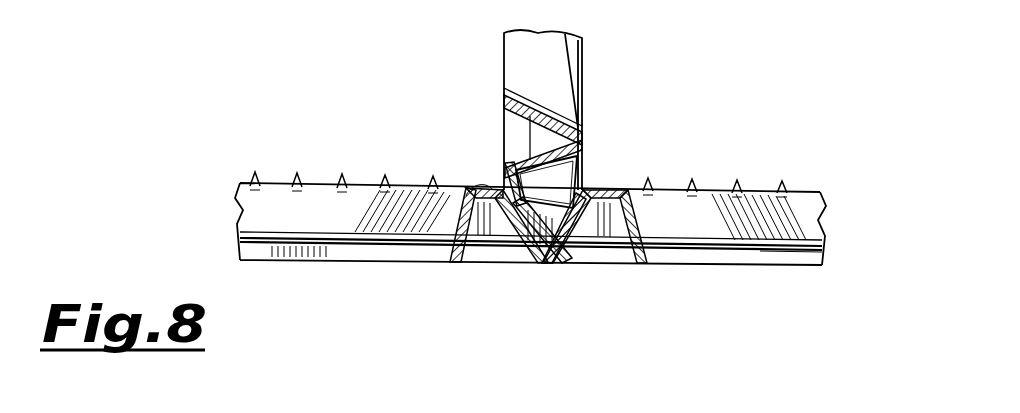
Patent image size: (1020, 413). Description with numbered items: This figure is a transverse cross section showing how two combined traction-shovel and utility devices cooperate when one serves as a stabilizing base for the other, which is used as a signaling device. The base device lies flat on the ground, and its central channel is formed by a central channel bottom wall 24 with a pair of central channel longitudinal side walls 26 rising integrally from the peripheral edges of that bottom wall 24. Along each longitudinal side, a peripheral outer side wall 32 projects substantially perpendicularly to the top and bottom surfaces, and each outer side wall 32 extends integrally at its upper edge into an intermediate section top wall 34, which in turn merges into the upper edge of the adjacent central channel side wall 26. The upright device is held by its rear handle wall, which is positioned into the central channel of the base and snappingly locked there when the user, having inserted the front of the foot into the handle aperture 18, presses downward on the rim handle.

The handle aperture 18 is at (540, 62).
The central channel bottom wall 24 is at (546, 258).
The central channel longitudinal side walls 26 is at (510, 245).
The peripheral outer side walls 32 is at (531, 251).
The intermediate section top walls 34 is at (478, 190).